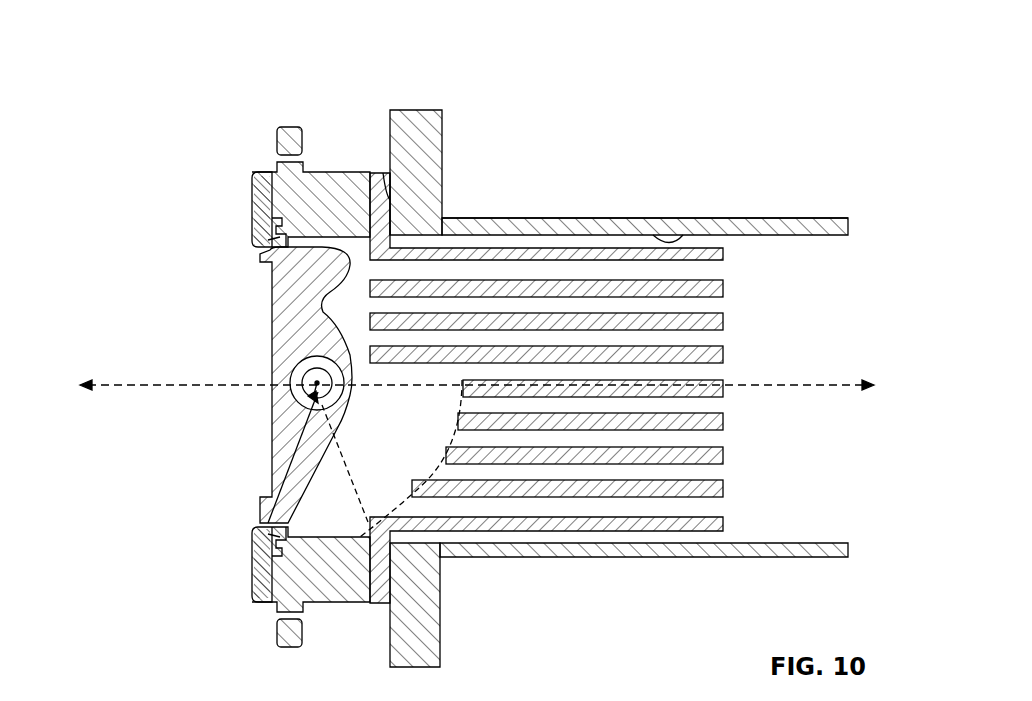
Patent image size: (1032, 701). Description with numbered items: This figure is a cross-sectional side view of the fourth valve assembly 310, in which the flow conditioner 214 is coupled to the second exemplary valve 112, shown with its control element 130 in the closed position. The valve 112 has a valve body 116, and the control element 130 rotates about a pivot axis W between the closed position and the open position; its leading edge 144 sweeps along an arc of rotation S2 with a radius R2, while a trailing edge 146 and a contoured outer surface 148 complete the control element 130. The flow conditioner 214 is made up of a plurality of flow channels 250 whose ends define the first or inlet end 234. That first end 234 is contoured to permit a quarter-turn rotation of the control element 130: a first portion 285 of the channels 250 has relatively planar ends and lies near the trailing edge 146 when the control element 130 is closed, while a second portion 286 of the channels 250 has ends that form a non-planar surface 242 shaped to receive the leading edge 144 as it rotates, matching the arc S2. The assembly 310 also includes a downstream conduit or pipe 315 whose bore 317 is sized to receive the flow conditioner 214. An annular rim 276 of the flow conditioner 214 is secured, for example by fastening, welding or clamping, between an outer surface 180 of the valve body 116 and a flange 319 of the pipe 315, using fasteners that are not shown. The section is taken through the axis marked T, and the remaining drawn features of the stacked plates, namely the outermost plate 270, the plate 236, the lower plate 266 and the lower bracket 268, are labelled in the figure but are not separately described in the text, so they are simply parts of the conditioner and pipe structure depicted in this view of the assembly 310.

The fourth valve assembly 310 is at (194, 357).
The second exemplary valve 112 is at (285, 357).
The valve body 116 is at (345, 192).
The outer surface 180 is at (390, 205).
The first portion 285 is at (363, 282).
The flange 319 is at (428, 145).
The annular rim 276 is at (380, 207).
The flow channels 250 is at (518, 272).
The flow conditioner 214 is at (563, 253).
The downstream pipe 315 is at (627, 218).
The bore 317 is at (683, 235).
The outer plate 270 is at (850, 228).
The trailing edge 146 is at (268, 240).
The contoured outer surface 148 is at (322, 308).
The pivot axis W is at (295, 365).
The control element 130 is at (290, 428).
The radius R2 is at (290, 467).
The leading edge 144 is at (266, 525).
The first end 234 is at (462, 390).
The non-planar surface 242 is at (458, 422).
The clutch plate 236 is at (725, 490).
The lower plate 266 is at (577, 521).
The arc of rotation S2 is at (440, 468).
The second portion 286 is at (422, 468).
The lower bracket 268 is at (372, 563).
The axis T is at (475, 385).